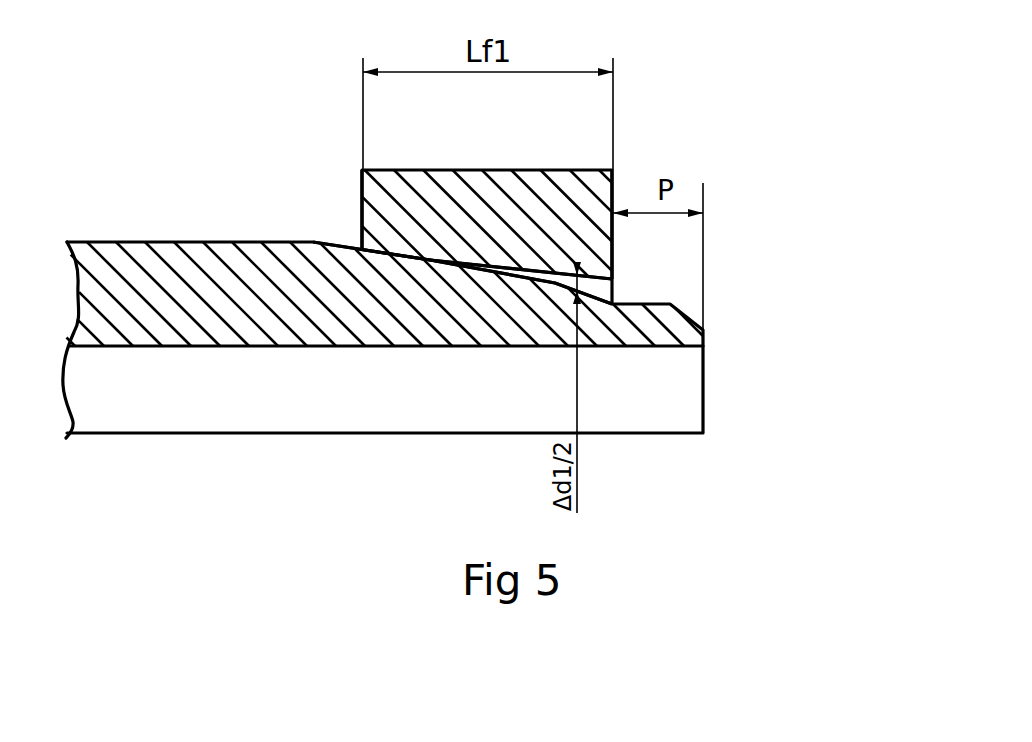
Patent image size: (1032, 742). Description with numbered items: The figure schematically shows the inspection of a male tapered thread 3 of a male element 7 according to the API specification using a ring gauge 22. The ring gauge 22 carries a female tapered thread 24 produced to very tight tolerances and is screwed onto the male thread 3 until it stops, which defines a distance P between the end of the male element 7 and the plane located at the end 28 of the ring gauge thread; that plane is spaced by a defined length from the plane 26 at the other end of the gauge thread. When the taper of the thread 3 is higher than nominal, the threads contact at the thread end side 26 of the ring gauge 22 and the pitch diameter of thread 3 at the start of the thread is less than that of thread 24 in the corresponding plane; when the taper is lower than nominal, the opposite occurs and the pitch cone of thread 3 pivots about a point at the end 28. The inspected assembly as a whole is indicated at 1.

The slider 1 is at (436, 294).
The male tapered thread 3 is at (520, 250).
The male element 7 is at (705, 330).
The ring gauge 22 is at (400, 193).
The female tapered thread 24 is at (546, 284).
The thread end side of the ring gauge 26 is at (362, 193).
The end of the thread of ring gauge 28 is at (613, 182).